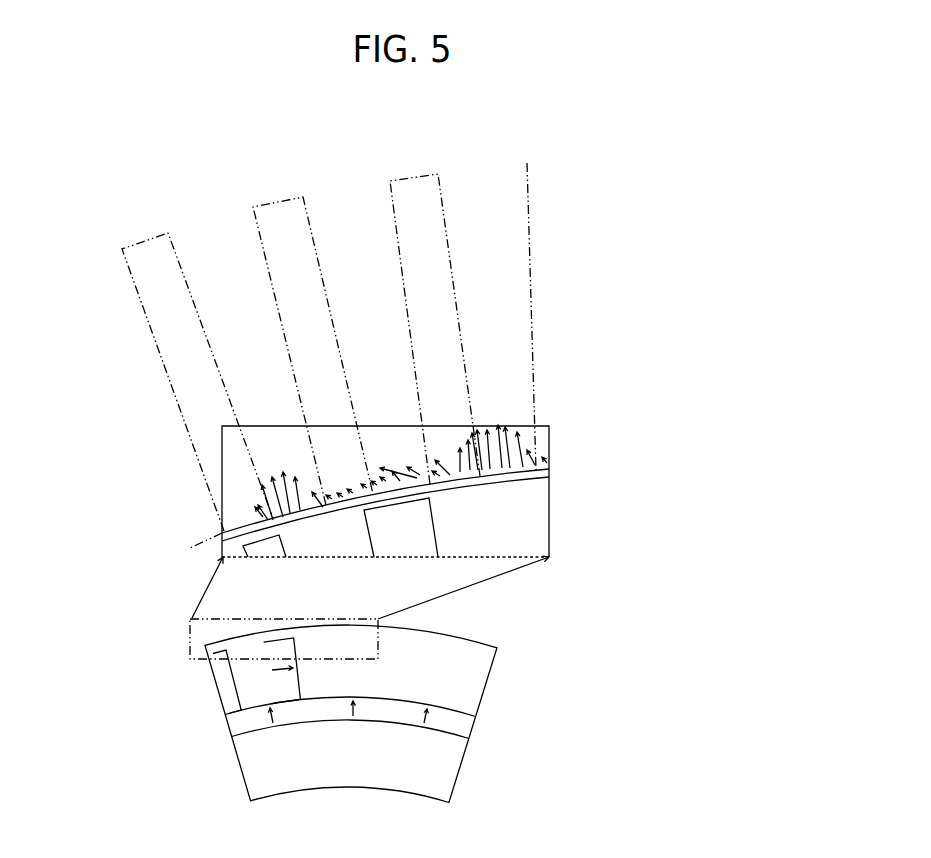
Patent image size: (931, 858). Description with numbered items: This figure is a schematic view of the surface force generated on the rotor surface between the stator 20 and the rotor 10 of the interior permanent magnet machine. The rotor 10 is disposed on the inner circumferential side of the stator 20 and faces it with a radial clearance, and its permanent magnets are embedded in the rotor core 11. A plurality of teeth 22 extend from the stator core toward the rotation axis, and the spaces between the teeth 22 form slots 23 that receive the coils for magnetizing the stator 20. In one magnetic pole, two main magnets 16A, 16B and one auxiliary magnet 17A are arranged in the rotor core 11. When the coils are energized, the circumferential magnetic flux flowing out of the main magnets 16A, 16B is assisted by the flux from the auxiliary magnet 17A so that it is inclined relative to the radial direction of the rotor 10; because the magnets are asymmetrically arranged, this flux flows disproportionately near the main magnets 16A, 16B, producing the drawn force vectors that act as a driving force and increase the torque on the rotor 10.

The rotor 10 is at (357, 617).
The rotor core 11 is at (538, 490).
The main magnet 16A is at (420, 550).
The main magnet 16B is at (268, 552).
The auxiliary magnet 17A is at (457, 728).
The stator 20 is at (339, 347).
The teeth 22 is at (334, 347).
The slots 23 is at (172, 307).